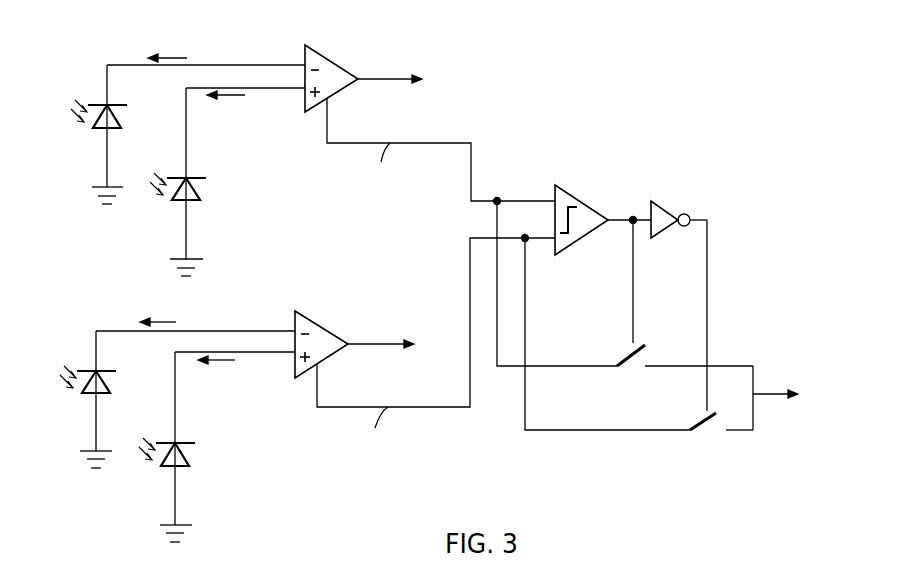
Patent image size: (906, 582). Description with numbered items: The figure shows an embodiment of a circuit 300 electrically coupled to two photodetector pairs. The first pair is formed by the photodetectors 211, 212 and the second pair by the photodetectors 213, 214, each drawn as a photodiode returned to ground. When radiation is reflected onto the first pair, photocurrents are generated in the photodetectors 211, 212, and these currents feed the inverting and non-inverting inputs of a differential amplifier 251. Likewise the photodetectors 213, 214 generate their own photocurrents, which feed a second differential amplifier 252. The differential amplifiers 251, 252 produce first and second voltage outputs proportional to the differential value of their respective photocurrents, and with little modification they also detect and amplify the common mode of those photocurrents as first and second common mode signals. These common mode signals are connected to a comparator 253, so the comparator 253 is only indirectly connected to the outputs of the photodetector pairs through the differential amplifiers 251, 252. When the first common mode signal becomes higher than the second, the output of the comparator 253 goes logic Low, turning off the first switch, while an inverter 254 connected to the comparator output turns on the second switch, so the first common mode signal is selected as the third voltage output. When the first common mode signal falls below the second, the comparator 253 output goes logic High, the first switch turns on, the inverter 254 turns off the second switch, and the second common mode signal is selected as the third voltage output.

The circuit 300 is at (79, 26).
The photodetector 211 is at (87, 144).
The photodetector 212 is at (177, 218).
The photodetector 213 is at (77, 409).
The photodetector 214 is at (167, 483).
The differential amplifier 251 is at (340, 72).
The differential amplifier 252 is at (320, 336).
The comparator 253 is at (590, 212).
The inverter 254 is at (665, 210).